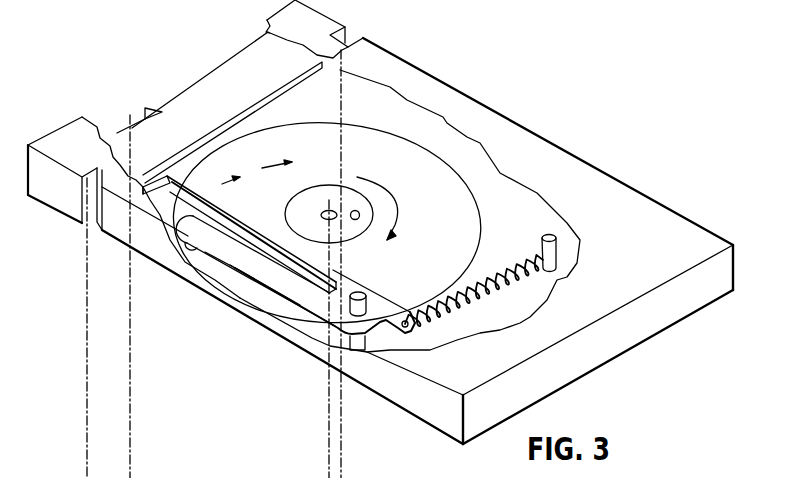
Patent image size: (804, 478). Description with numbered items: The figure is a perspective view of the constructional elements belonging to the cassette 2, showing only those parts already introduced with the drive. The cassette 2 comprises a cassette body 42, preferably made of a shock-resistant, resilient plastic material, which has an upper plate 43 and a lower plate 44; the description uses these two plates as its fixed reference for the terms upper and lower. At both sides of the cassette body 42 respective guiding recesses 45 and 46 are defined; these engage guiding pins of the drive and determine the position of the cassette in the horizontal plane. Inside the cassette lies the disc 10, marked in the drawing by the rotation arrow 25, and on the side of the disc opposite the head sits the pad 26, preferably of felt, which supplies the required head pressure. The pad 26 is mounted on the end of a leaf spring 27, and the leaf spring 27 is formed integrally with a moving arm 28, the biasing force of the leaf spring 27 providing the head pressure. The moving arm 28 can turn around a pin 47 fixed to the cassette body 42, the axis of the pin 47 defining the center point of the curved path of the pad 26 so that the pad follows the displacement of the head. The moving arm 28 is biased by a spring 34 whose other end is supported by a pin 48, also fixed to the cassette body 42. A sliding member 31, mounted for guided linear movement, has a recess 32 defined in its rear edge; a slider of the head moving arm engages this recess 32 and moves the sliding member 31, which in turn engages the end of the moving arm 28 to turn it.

The cassette 2 is at (325, 378).
The disc 10 is at (160, 235).
The rotating disc 25 is at (271, 166).
The pad 26 is at (193, 248).
The leaf spring 27 is at (245, 250).
The moving arm 28 is at (175, 174).
The sliding member 31 is at (223, 80).
The recess 32 is at (145, 118).
The spring 34 is at (500, 273).
The cassette body 42 is at (667, 302).
The upper plate 43 is at (413, 87).
The lower plate 44 is at (425, 425).
The guiding recess 45 is at (97, 227).
The guiding recess 46 is at (352, 35).
The pin 47 is at (362, 352).
The pin 48 is at (558, 236).